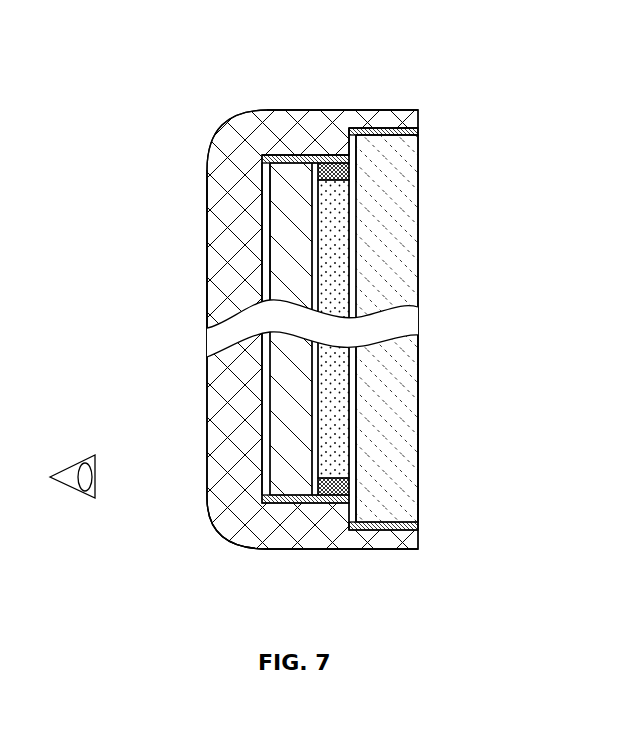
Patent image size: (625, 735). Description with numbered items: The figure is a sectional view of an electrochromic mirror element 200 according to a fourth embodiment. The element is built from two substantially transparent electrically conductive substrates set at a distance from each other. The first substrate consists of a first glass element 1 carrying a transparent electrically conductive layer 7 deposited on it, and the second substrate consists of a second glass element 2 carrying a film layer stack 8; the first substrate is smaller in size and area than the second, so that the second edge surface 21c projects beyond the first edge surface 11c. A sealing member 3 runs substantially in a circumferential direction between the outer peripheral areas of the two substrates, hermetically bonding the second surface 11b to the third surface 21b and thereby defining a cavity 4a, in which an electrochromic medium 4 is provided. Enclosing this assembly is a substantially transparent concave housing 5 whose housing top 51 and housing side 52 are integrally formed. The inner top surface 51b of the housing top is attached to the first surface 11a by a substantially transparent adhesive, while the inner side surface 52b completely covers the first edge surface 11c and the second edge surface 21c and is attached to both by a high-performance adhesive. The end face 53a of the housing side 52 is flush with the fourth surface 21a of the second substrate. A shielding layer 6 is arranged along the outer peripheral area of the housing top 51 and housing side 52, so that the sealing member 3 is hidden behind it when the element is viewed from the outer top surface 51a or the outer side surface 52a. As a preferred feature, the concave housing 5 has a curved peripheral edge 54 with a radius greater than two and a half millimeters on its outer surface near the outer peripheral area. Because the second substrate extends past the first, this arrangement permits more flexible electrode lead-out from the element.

The electrochromic mirror element 200 is at (135, 65).
The concave housing 5 is at (98, 205).
The housing top 51 is at (240, 280).
The outer top surface 51a is at (207, 320).
The inner top surface 51b is at (258, 235).
The housing side 52 is at (320, 155).
The outer side surface 52a is at (383, 127).
The inner side surface 52b is at (320, 155).
The end face 53a is at (418, 125).
The shielding layer 6 is at (262, 160).
The first edge surface 11c is at (270, 167).
The first glass element 1 is at (262, 414).
The first surface 11a is at (283, 420).
The second surface 11b is at (262, 470).
The transparent electrically conductive layer 7 is at (300, 385).
The film layer stack 8 is at (358, 242).
The cavity 4a is at (337, 295).
The electrochromic medium 4 is at (357, 470).
The second glass element 2 is at (400, 412).
The second edge surface 21c is at (418, 146).
The third surface 21b is at (362, 373).
The fourth surface 21a is at (418, 448).
The sealing member 3 is at (418, 527).
The curved peripheral edge 54 is at (222, 535).